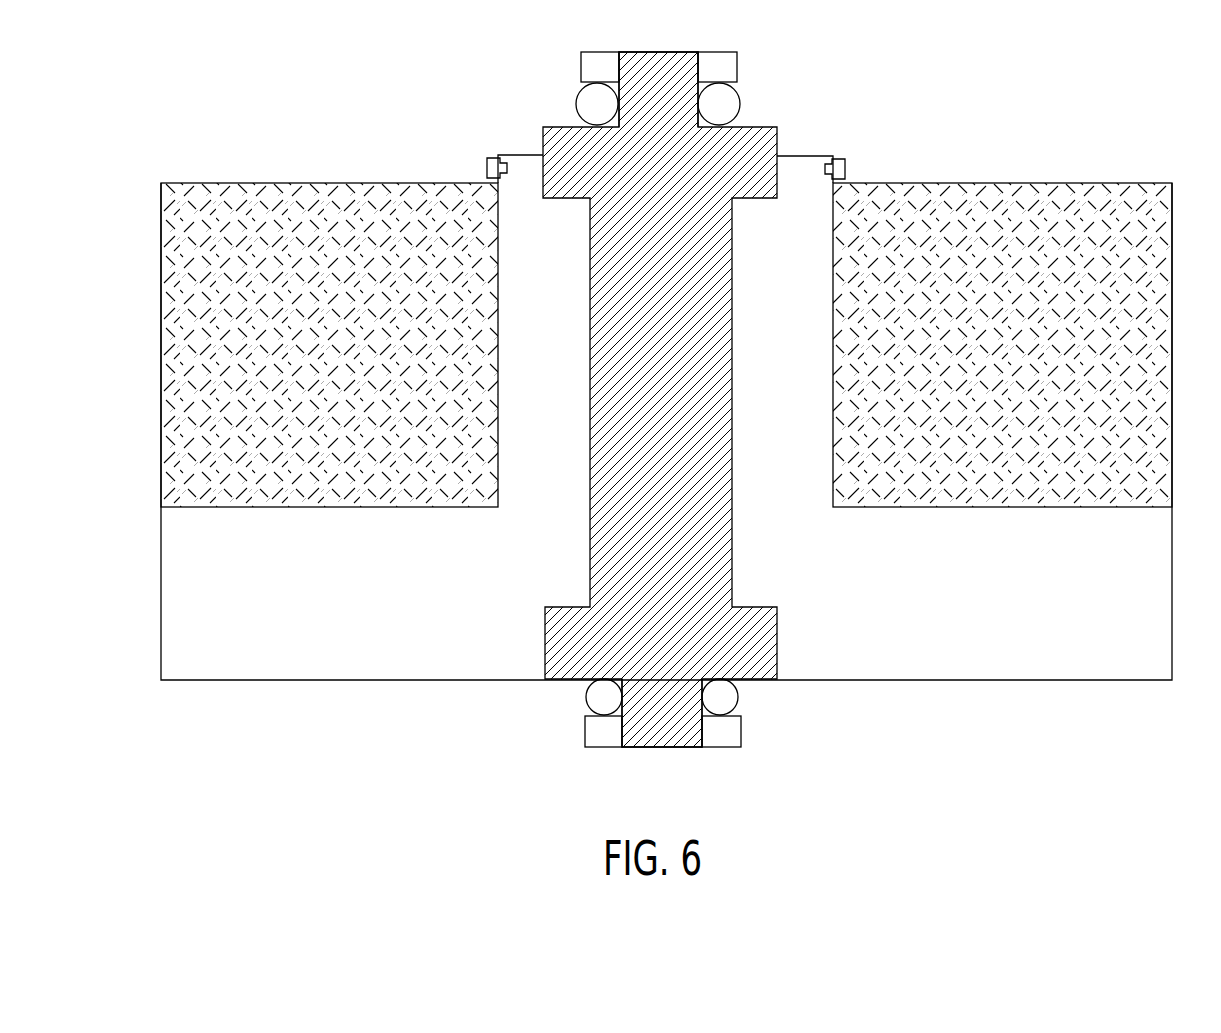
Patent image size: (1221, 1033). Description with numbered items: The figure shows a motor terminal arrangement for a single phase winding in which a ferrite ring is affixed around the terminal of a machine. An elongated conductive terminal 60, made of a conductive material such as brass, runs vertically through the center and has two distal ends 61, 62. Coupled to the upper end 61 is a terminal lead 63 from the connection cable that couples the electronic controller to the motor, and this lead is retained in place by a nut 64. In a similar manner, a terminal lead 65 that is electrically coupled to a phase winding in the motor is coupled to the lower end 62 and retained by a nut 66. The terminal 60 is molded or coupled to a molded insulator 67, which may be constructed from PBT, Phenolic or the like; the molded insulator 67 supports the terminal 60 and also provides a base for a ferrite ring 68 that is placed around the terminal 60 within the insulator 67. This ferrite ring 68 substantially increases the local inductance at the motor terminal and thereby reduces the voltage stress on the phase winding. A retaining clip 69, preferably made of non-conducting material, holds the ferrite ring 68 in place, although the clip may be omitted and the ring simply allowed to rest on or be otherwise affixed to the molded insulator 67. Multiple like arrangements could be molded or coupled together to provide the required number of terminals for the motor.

The elongated conductive terminal 60 is at (755, 125).
The distal end of terminal 61 is at (653, 52).
The distal end of terminal 62 is at (672, 748).
The terminal lead 63 is at (587, 107).
The nut 64 is at (587, 68).
The terminal lead 65 is at (597, 696).
The nut 66 is at (586, 740).
The molded insulator 67 is at (161, 580).
The ferrite ring 68 is at (159, 283).
The retaining clip 69 is at (493, 168).